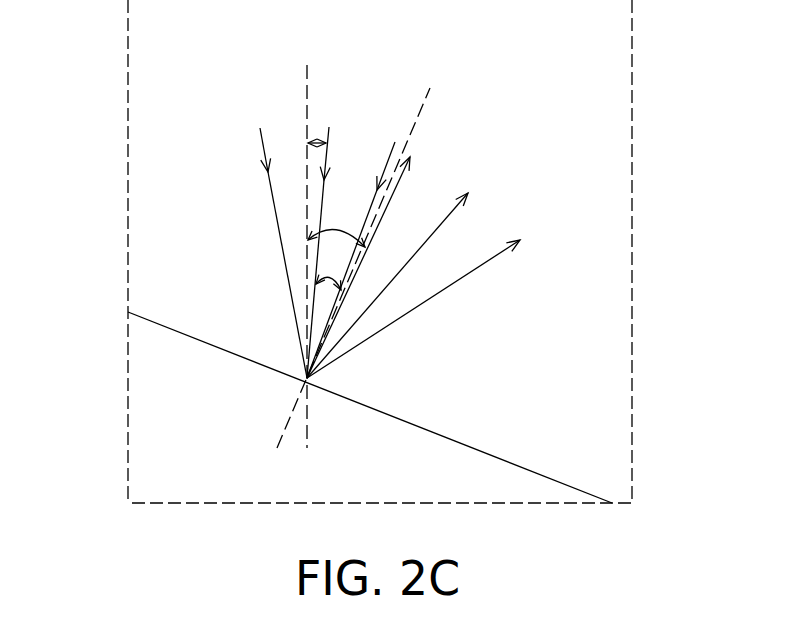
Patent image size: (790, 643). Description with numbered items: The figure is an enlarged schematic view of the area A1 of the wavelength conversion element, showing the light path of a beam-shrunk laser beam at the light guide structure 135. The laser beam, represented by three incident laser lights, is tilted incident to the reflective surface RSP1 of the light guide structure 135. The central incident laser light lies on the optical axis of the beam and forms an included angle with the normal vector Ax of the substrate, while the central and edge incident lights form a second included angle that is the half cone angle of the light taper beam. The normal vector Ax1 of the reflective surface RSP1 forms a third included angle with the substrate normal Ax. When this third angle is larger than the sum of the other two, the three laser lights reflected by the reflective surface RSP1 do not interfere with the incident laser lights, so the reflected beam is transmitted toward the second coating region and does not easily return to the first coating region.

The area A1 is at (633, 89).
The light guide structure 135 is at (152, 423).
The reflective surface RSP1 is at (431, 428).
The normal vector of substrate Ax is at (305, 72).
The normal vector of reflective surface Ax1 is at (429, 86).